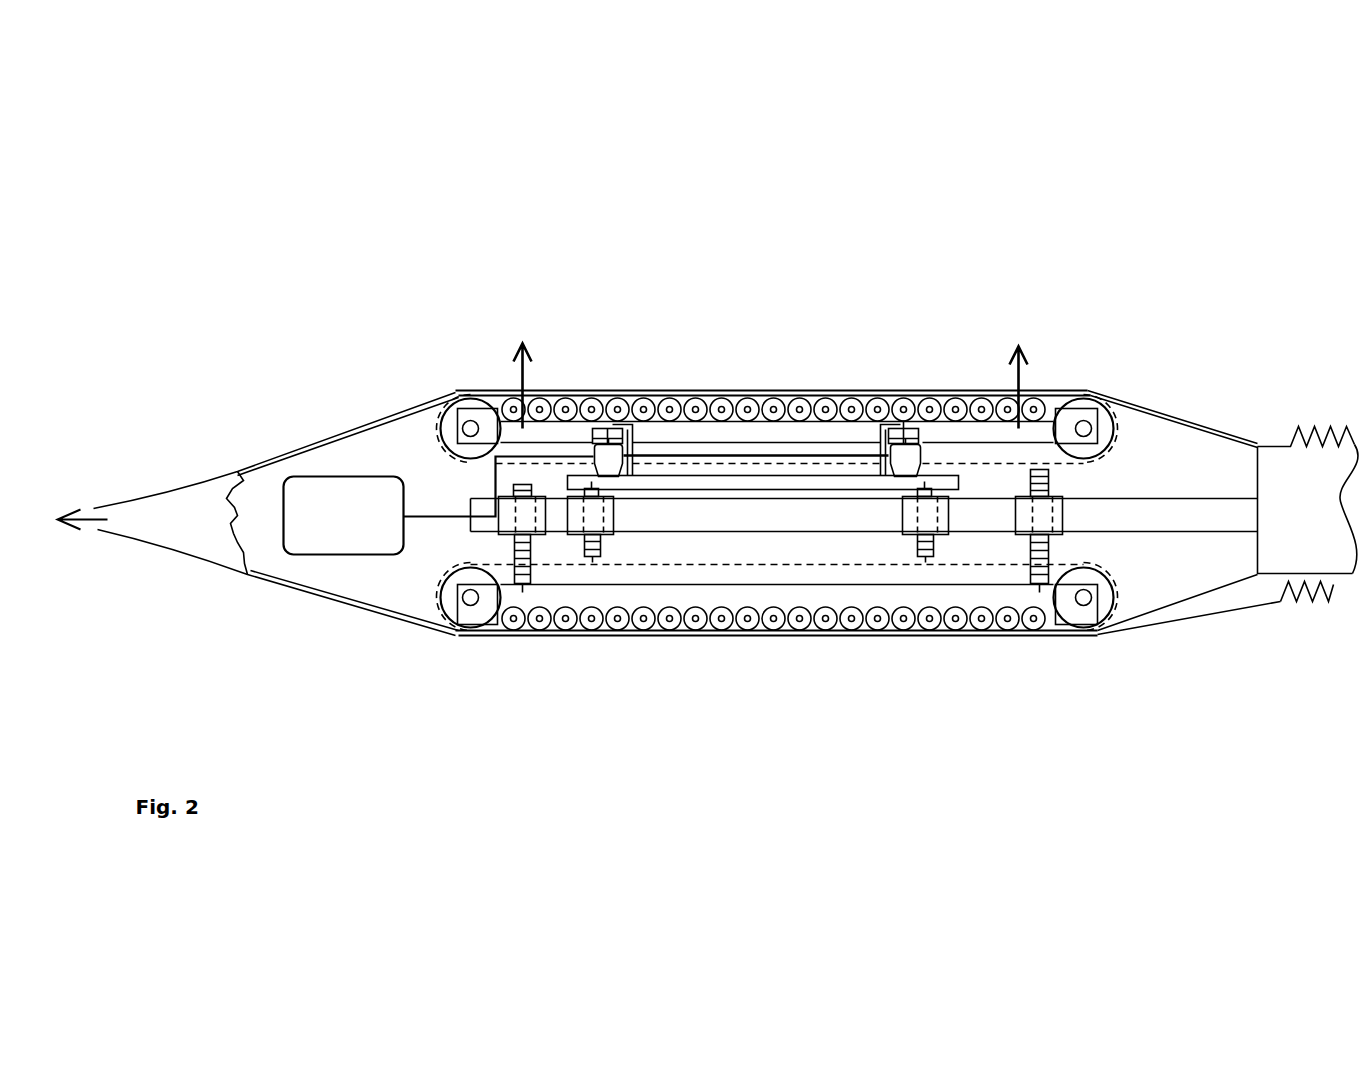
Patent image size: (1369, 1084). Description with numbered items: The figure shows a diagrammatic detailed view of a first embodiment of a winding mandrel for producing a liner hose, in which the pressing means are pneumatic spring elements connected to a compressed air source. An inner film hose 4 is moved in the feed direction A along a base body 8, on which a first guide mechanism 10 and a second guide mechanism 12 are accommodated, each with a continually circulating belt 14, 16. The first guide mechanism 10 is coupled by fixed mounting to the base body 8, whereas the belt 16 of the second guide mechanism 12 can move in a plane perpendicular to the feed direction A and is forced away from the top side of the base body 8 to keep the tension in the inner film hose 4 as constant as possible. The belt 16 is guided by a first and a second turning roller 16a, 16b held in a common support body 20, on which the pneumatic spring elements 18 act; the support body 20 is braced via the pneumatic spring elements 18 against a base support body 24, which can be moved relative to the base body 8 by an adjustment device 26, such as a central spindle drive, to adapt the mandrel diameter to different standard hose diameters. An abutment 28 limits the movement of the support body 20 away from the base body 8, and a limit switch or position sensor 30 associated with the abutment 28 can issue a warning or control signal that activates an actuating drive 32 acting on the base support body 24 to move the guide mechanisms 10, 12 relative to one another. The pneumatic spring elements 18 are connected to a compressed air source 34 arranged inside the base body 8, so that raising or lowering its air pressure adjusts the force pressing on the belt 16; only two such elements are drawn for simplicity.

The feed direction A is at (88, 507).
The inner film hose 4 is at (173, 490).
The base body 8 is at (1140, 512).
The first guide mechanism 10 is at (1067, 648).
The second guide mechanism 12 is at (1057, 380).
The belt 14 is at (1117, 593).
The belt 16 is at (1122, 408).
The first turning roller 16a is at (1105, 408).
The second turning roller 16b is at (447, 412).
The pneumatic spring element 18 is at (912, 450).
The support body 20 is at (733, 432).
The base support body 24 is at (775, 482).
The adjustment device 26 is at (592, 550).
The abutment 28 is at (631, 424).
The limit switch and/or position sensor 30 is at (594, 430).
The actuating drive 32 is at (607, 515).
The compressed air source 34 is at (348, 500).